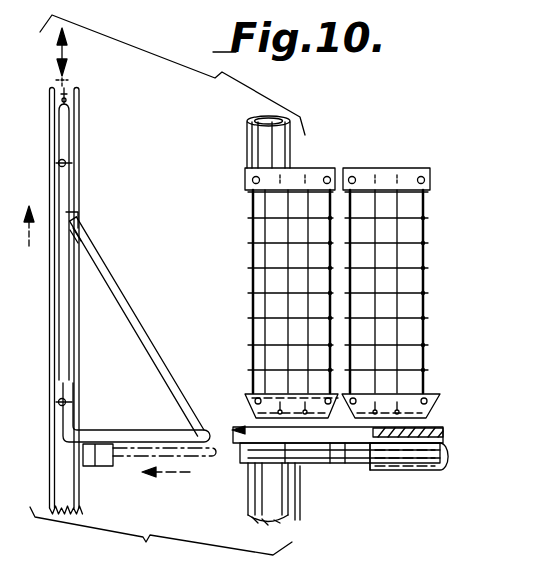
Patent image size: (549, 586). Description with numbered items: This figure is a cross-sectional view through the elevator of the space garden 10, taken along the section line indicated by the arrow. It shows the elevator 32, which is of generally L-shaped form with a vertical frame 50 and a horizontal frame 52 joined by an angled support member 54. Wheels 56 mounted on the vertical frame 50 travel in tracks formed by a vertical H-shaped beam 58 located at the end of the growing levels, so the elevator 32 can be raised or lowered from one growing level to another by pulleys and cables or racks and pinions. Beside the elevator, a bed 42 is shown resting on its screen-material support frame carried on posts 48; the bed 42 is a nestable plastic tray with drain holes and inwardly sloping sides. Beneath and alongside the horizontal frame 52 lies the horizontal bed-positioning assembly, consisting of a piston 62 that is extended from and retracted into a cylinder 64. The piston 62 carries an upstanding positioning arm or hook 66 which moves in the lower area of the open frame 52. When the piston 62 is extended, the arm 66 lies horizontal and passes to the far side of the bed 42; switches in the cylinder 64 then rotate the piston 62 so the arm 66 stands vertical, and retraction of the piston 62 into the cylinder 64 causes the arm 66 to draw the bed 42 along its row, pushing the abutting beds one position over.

The space garden 10 is at (10, 272).
The elevator 32 is at (140, 290).
The bed 42 is at (395, 172).
The post 48 is at (353, 203).
The vertical frame 50 is at (63, 135).
The horizontal frame 52 is at (158, 430).
The angled support member 54 is at (140, 333).
The wheel 56 is at (66, 163).
The vertical H-shaped beam 58 is at (62, 480).
The piston 62 is at (320, 457).
The cylinder 64 is at (400, 453).
The positioning arm 66 is at (238, 467).